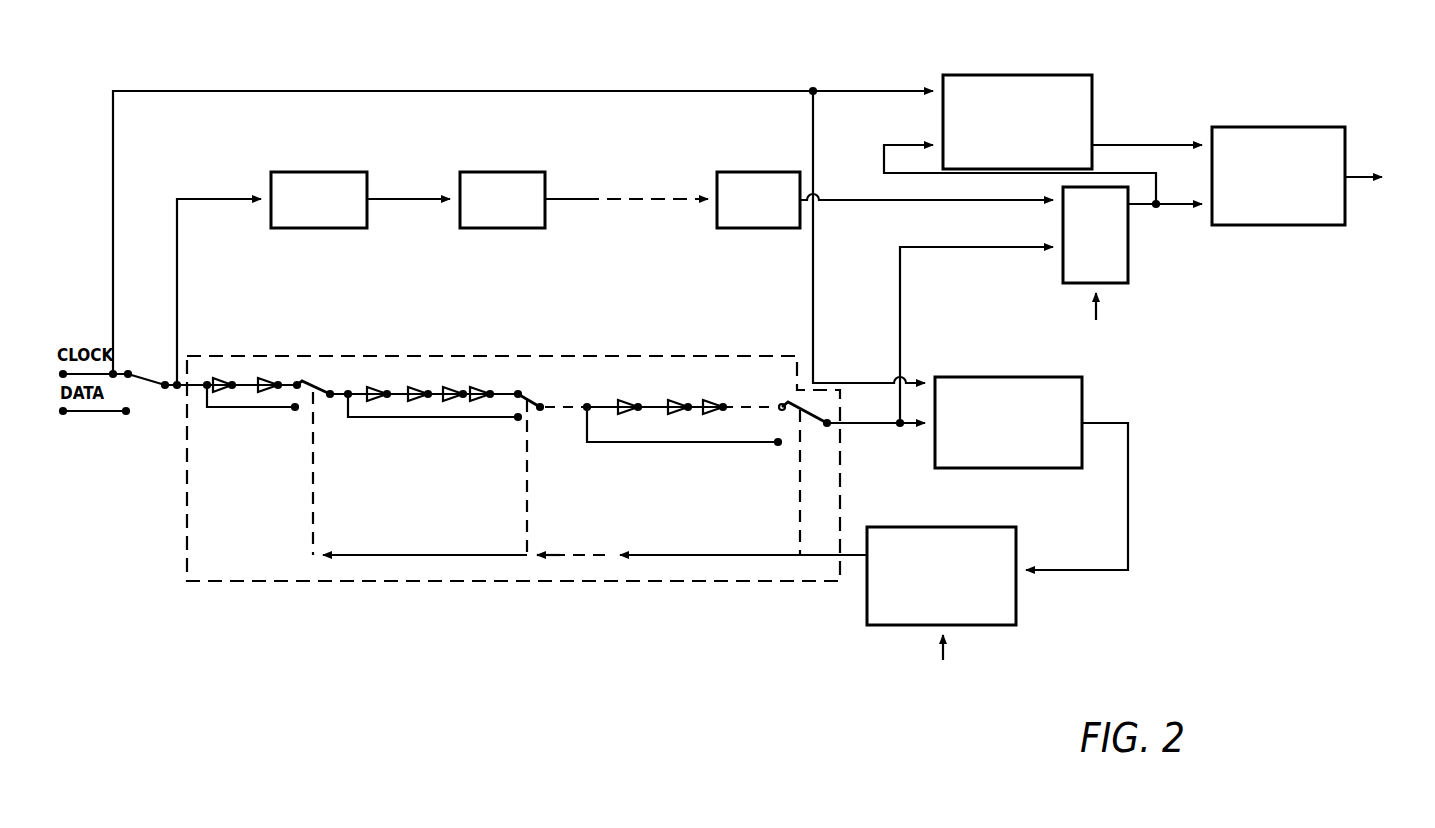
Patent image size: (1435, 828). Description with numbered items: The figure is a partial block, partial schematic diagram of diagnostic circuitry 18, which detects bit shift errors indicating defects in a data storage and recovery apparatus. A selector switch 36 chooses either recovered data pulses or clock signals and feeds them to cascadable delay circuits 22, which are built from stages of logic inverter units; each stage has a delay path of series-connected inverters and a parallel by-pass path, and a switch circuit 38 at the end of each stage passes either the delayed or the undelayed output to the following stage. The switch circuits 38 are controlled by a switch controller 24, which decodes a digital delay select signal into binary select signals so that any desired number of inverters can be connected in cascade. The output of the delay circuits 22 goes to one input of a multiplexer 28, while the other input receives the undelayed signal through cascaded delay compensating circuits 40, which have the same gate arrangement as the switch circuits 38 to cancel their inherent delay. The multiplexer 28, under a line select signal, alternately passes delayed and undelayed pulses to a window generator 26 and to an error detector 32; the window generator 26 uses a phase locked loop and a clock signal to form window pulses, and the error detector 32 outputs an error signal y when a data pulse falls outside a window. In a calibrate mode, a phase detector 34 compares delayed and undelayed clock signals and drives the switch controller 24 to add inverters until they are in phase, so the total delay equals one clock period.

The diagnostic circuitry 18 is at (1165, 541).
The cascadable delay circuits 22 is at (481, 356).
The switch controller 24 is at (1016, 527).
The window generator 26 is at (1092, 77).
The multiplexer 28 is at (1129, 257).
The error detector 32 is at (1306, 127).
The phase detector 34 is at (1083, 400).
The selector switch 36 is at (148, 372).
The switch circuit 38 is at (320, 392).
The delay compensating circuits 40 is at (318, 172).